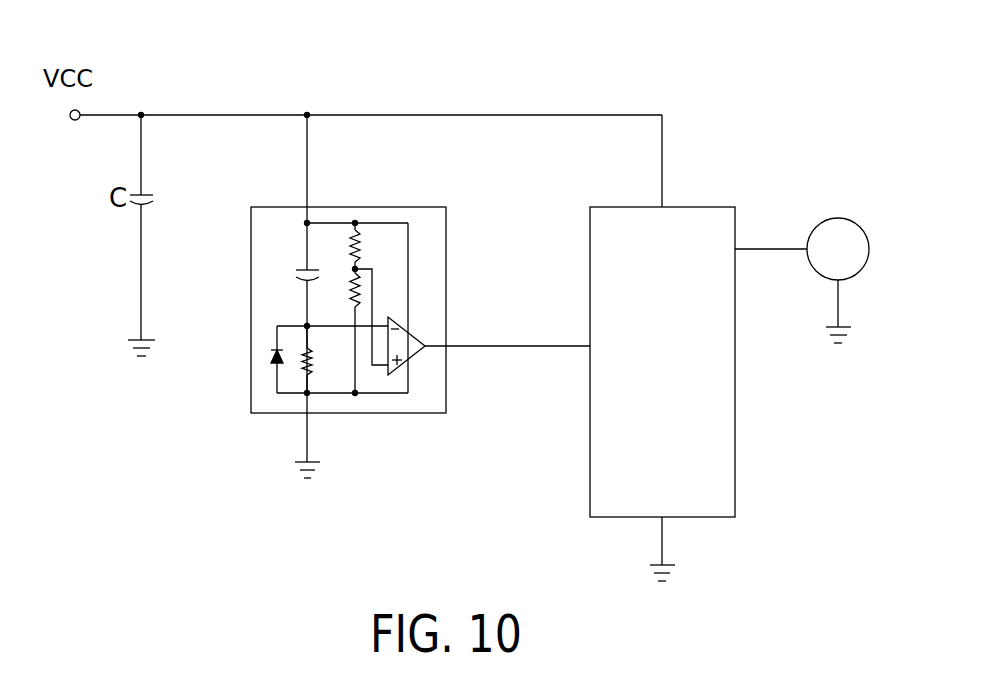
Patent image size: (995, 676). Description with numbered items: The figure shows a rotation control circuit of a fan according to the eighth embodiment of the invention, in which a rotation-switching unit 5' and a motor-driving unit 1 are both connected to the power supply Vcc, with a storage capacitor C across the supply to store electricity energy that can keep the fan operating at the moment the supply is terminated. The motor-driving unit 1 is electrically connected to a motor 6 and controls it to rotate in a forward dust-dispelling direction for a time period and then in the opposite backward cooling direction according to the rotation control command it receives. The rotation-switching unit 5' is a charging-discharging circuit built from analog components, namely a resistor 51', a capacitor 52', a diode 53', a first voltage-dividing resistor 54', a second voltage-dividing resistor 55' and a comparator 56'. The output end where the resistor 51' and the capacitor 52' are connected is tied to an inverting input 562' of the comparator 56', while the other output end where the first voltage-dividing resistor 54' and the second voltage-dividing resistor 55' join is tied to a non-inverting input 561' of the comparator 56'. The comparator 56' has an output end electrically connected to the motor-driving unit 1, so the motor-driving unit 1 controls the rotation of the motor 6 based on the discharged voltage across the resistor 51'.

The motor-driving unit 1 is at (692, 517).
The motor 6 is at (817, 230).
The rotation-switching unit 5' is at (348, 358).
The resistor 51' is at (262, 396).
The capacitor 52' is at (259, 228).
The diode 53' is at (231, 362).
The first voltage-dividing resistor 54' is at (402, 203).
The second voltage-dividing resistor 55' is at (345, 223).
The comparator 56' is at (489, 361).
The non-inverting input 561' is at (415, 432).
The inverting input 562' is at (453, 269).